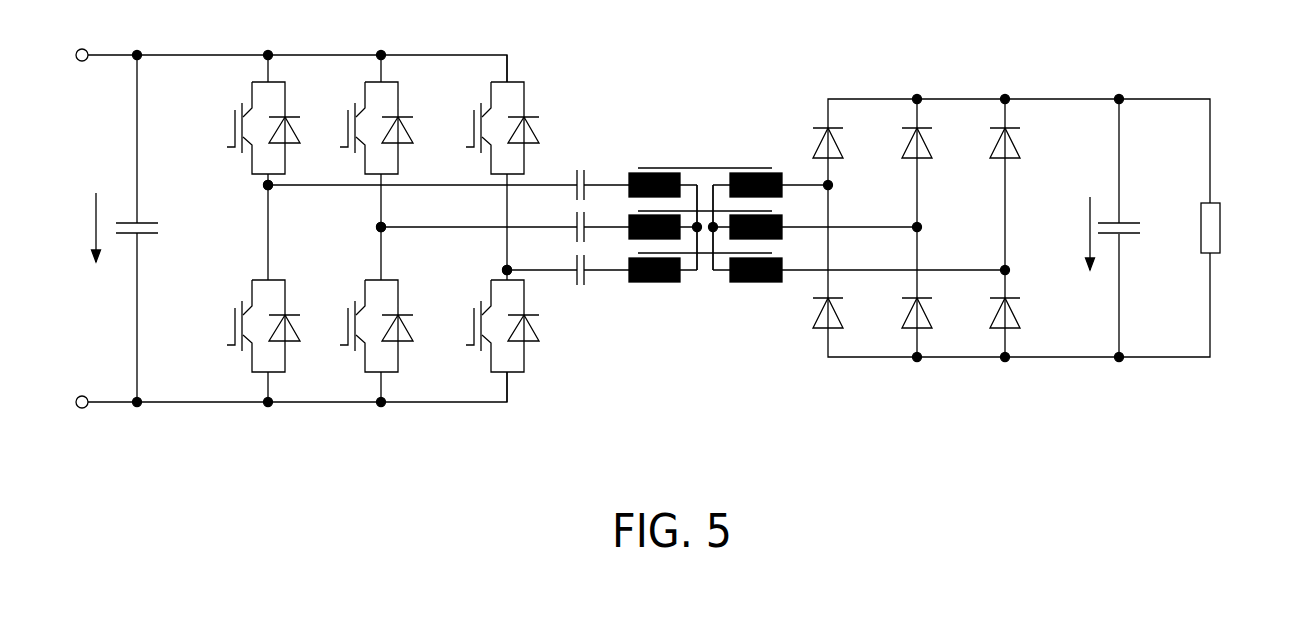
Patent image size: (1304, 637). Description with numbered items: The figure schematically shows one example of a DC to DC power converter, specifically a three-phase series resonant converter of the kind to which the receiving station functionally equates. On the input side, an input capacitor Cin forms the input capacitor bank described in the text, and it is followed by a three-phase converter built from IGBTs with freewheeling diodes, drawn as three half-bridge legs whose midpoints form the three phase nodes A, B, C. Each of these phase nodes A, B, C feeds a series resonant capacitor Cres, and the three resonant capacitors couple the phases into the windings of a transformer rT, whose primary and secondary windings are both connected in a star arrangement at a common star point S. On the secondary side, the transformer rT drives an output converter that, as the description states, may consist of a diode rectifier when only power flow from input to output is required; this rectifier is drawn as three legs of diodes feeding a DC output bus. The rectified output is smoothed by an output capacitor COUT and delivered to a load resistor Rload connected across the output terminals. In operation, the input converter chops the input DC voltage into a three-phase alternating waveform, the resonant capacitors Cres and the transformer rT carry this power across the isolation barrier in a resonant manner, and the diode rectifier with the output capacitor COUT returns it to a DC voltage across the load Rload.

The input capacitor Cin is at (154, 228).
The phase A node A is at (258, 190).
The phase B node B is at (370, 226).
The phase C node C is at (496, 262).
The resonant capacitors Cres is at (588, 201).
The transformer rT is at (705, 196).
The star point S is at (701, 243).
The output capacitor COUT is at (1145, 228).
The load resistor Rload is at (1246, 228).